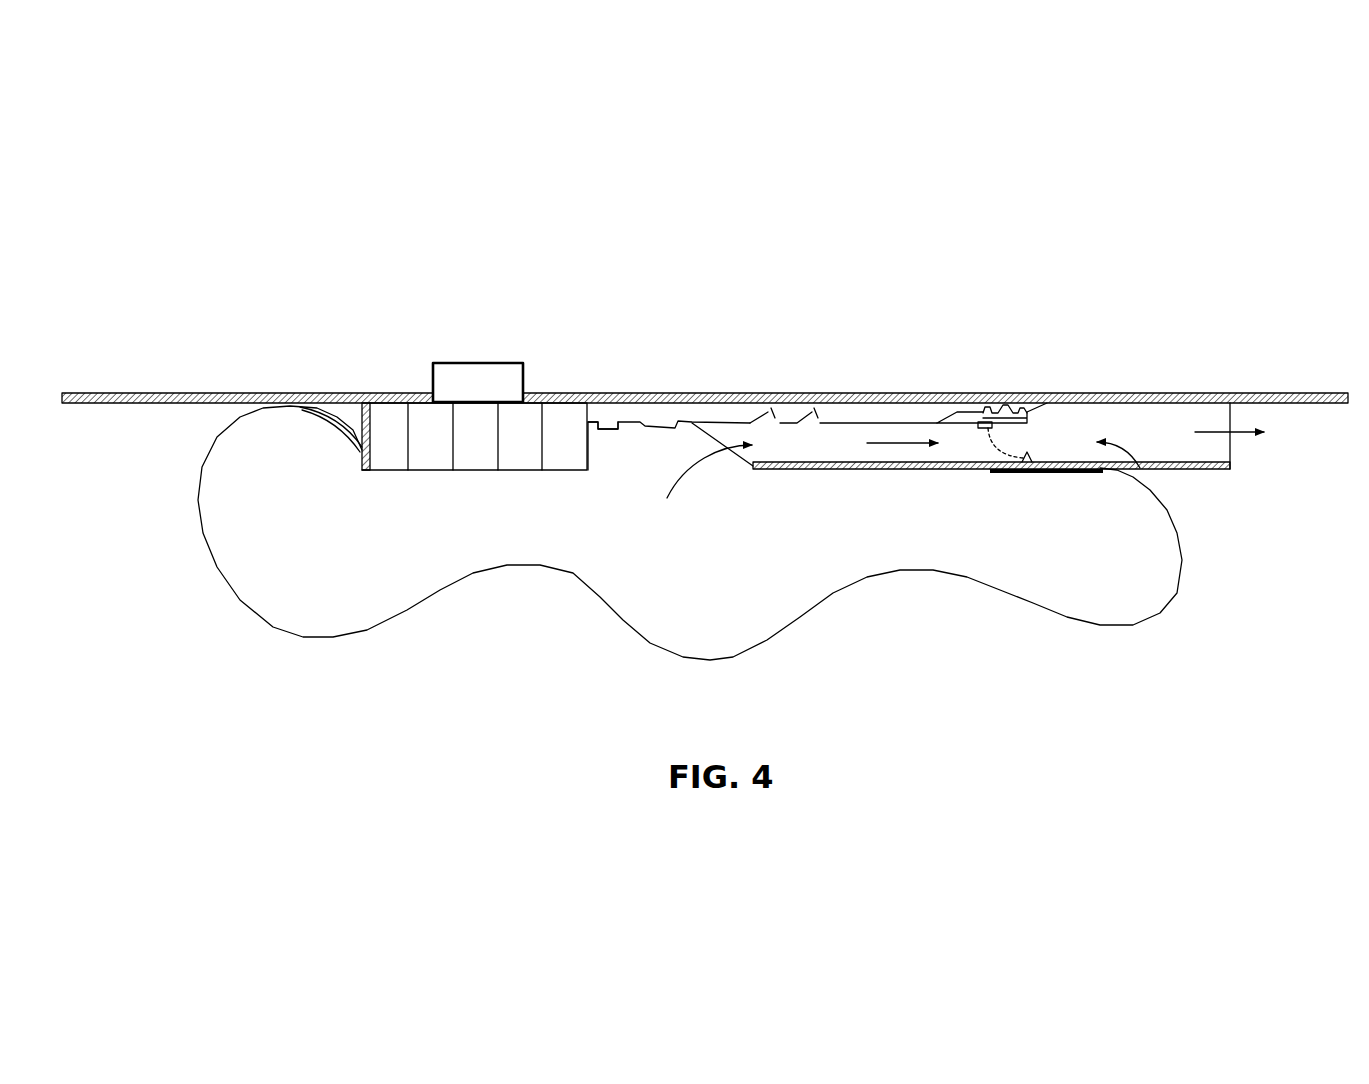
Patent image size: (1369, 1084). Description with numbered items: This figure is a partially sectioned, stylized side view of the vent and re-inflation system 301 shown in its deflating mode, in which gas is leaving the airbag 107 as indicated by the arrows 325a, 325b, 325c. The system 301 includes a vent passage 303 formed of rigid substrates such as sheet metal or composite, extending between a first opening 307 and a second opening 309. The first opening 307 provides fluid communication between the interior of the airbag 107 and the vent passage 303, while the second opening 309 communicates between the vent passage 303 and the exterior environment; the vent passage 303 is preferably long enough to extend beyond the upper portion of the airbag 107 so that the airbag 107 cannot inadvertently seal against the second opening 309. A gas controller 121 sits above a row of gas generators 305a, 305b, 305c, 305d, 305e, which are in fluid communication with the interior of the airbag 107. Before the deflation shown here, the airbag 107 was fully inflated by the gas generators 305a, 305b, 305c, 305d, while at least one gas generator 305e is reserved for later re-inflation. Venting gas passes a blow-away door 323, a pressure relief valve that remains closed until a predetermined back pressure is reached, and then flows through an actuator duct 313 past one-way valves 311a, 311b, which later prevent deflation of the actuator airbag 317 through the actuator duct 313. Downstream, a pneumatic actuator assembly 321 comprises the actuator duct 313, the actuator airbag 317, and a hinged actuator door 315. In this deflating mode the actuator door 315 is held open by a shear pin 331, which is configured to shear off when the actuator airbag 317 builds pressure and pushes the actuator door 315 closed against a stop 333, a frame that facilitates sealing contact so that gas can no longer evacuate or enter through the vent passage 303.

The vent and re-inflation system 301 is at (333, 258).
The gas controller 121 is at (473, 362).
The gas generator 305a is at (380, 447).
The gas generator 305b is at (422, 428).
The gas generator 305c is at (478, 433).
The gas generator 305d is at (523, 423).
The gas generator 305e is at (557, 423).
The blow-away door 323 is at (640, 423).
The first opening 307 is at (737, 458).
The arrow 325a is at (667, 498).
The arrow 325b is at (905, 445).
The arrow 325c is at (1240, 430).
The one-way valve 311a is at (762, 405).
The one-way valve 311b is at (802, 408).
The actuator duct 313 is at (882, 413).
The actuator door 315 is at (1005, 420).
The actuator airbag 317 is at (1007, 411).
The shear pin 331 is at (984, 430).
The stop 333 is at (1027, 463).
The pneumatic actuator assembly 321 is at (1140, 470).
The vent passage 303 is at (1135, 413).
The second opening 309 is at (1233, 450).
The airbag 107 is at (1137, 625).